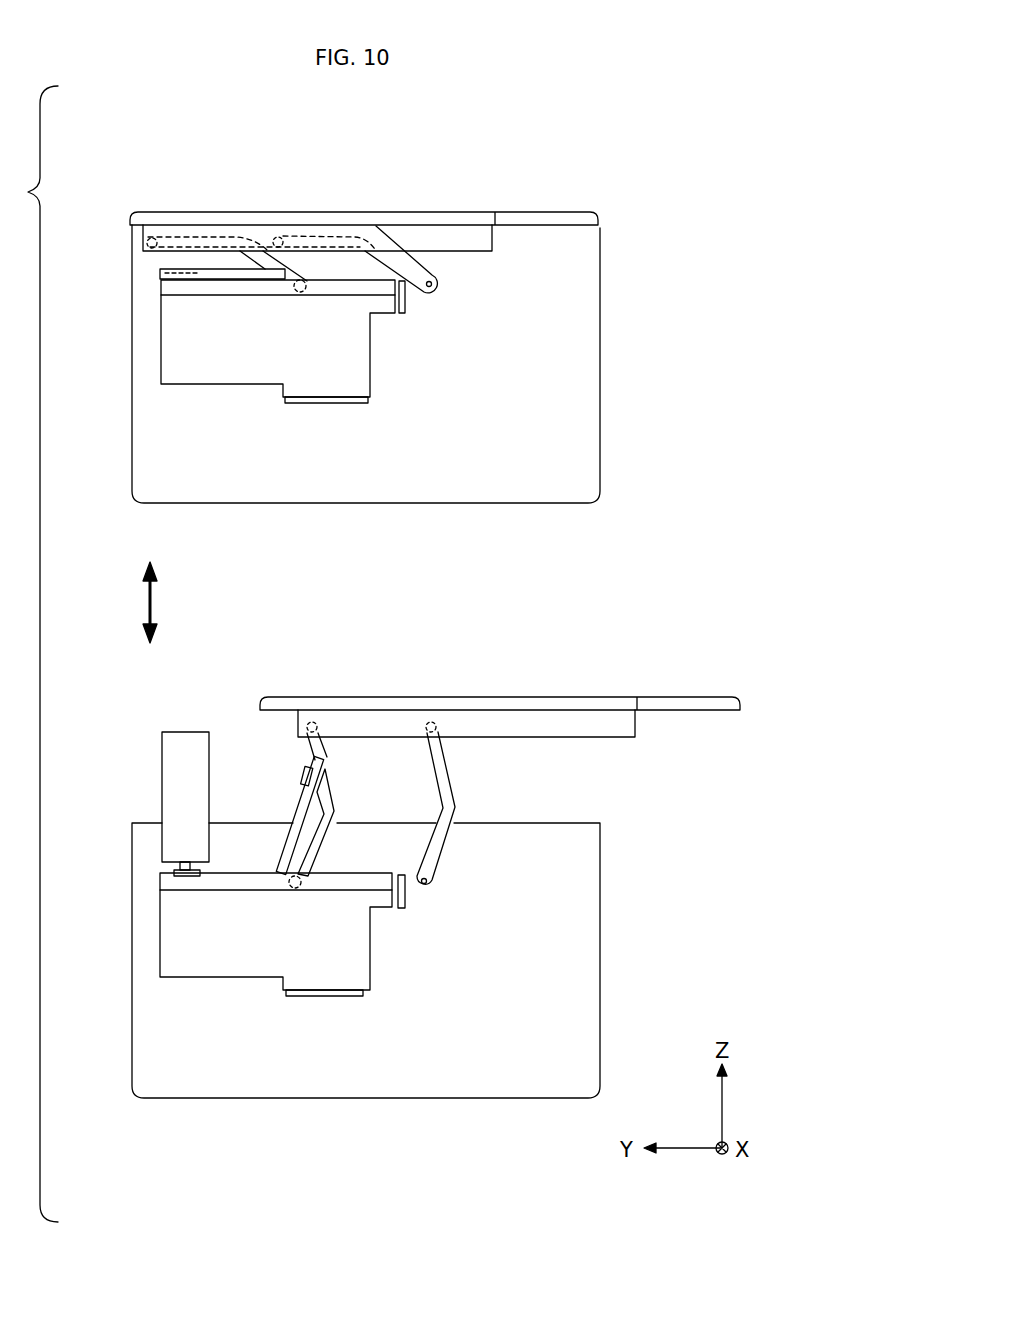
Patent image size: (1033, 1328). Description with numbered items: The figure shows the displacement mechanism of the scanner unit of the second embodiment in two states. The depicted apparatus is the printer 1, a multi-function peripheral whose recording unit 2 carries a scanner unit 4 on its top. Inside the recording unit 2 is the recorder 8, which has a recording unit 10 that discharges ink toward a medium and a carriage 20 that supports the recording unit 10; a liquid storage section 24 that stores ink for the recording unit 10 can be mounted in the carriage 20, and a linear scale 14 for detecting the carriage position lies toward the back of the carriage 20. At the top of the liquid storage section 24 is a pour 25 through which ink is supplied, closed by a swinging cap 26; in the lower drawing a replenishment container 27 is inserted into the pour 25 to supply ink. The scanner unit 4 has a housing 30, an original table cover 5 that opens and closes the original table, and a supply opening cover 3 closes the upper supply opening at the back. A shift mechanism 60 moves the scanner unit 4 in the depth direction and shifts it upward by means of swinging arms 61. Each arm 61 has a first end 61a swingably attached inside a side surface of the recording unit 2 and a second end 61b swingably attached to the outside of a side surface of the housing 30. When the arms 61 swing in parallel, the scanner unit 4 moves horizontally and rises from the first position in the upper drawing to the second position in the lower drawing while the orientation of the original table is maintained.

The printer 1 is at (128, 192).
The recording unit 2 is at (600, 395).
The supply opening cover 3 is at (538, 212).
The scanner unit 4 is at (476, 191).
The original table cover 5 is at (398, 212).
The recorder 8 is at (406, 554).
The recording unit 10 is at (338, 403).
The linear scale 14 is at (405, 297).
The carriage 20 is at (370, 352).
The liquid storage section 24 is at (433, 297).
The pour 25 is at (160, 268).
The cap 26 is at (165, 271).
The replenishment container 27 is at (183, 732).
The housing 30 is at (493, 243).
The shift mechanism 60 is at (435, 269).
The arm 61 is at (272, 253).
The first end 61a is at (292, 292).
The second end 61b is at (156, 238).